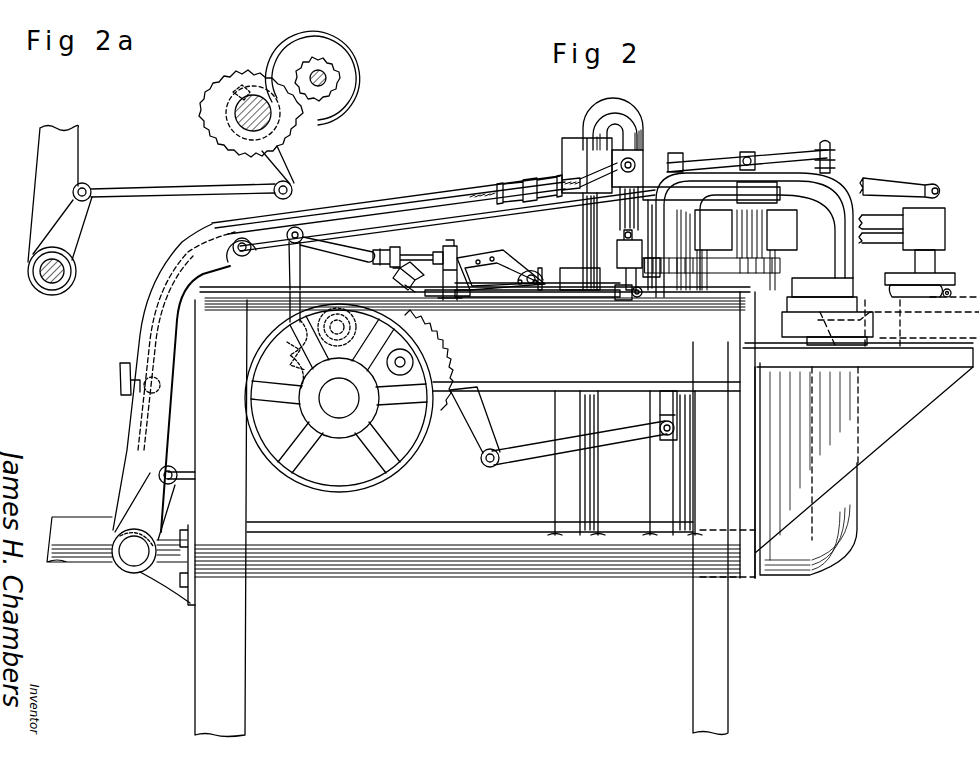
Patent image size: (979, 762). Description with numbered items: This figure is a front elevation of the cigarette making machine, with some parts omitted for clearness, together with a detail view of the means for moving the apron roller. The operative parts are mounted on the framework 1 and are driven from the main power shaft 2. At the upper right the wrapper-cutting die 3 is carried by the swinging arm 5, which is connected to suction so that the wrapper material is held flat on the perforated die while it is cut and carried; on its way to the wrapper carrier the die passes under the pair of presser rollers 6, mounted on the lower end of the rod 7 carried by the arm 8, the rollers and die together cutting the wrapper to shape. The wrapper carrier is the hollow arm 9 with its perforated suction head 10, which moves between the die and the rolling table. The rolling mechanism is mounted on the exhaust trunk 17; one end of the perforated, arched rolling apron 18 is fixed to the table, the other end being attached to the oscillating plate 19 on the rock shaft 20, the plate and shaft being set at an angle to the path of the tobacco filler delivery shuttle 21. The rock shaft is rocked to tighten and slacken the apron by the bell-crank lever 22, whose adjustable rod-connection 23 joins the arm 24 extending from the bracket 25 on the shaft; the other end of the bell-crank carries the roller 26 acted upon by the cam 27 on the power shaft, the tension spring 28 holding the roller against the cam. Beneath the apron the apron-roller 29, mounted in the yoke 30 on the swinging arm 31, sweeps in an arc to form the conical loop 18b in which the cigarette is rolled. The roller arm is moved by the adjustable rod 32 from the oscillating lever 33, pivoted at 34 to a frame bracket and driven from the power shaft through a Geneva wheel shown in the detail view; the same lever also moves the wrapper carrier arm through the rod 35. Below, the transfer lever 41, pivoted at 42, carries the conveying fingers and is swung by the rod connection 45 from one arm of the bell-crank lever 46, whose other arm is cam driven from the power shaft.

In FIG. 2, the framework 1 is at (228, 617).
In FIG. 2a, the main power shaft 2 is at (249, 114).
In FIG. 2, the main power shaft 2 is at (349, 398).
In FIG. 2, the die 3 is at (848, 305).
In FIG. 2, the swinging arm 5 is at (870, 340).
In FIG. 2, the presser rollers 6 is at (905, 294).
In FIG. 2, the rod 7 is at (895, 193).
In FIG. 2, the arm 8 is at (922, 229).
In FIG. 2, the hollow arm 9 is at (840, 256).
In FIG. 2, the perforated suction head 10 is at (848, 283).
In FIG. 2, the exhaust trunk 17 is at (497, 409).
In FIG. 2, the rolling apron 18 is at (582, 290).
In FIG. 2, the conical loop 18b is at (625, 300).
In FIG. 2, the oscillating plate 19 is at (477, 258).
In FIG. 2, the rock shaft 20 is at (412, 252).
In FIG. 2, the tobacco filler delivery shuttle 21 is at (525, 265).
In FIG. 2, the bell-crank lever 22 is at (300, 278).
In FIG. 2, the adjustable rod-connection 23 is at (393, 273).
In FIG. 2, the arm 24 is at (452, 282).
In FIG. 2, the bracket 25 is at (450, 246).
In FIG. 2, the roller 26 is at (354, 330).
In FIG. 2, the cam 27 is at (268, 360).
In FIG. 2, the tension spring 28 is at (276, 345).
In FIG. 2, the apron-roller 29 is at (637, 298).
In FIG. 2, the yoke 30 is at (617, 260).
In FIG. 2, the swinging arm 31 is at (622, 213).
In FIG. 2, the adjustable rod 32 is at (432, 196).
In FIG. 2a, the oscillating lever 33 is at (151, 194).
In FIG. 2, the oscillating lever 33 is at (174, 378).
In FIG. 2a, the pivot 34 is at (50, 277).
In FIG. 2, the pivot 34 is at (134, 563).
In FIG. 2, the rod 35 is at (523, 208).
In FIG. 2, the lever 41 is at (660, 417).
In FIG. 2, the pivot 42 is at (670, 398).
In FIG. 2, the rod connection 45 is at (610, 442).
In FIG. 2, the bell-crank lever 46 is at (475, 450).